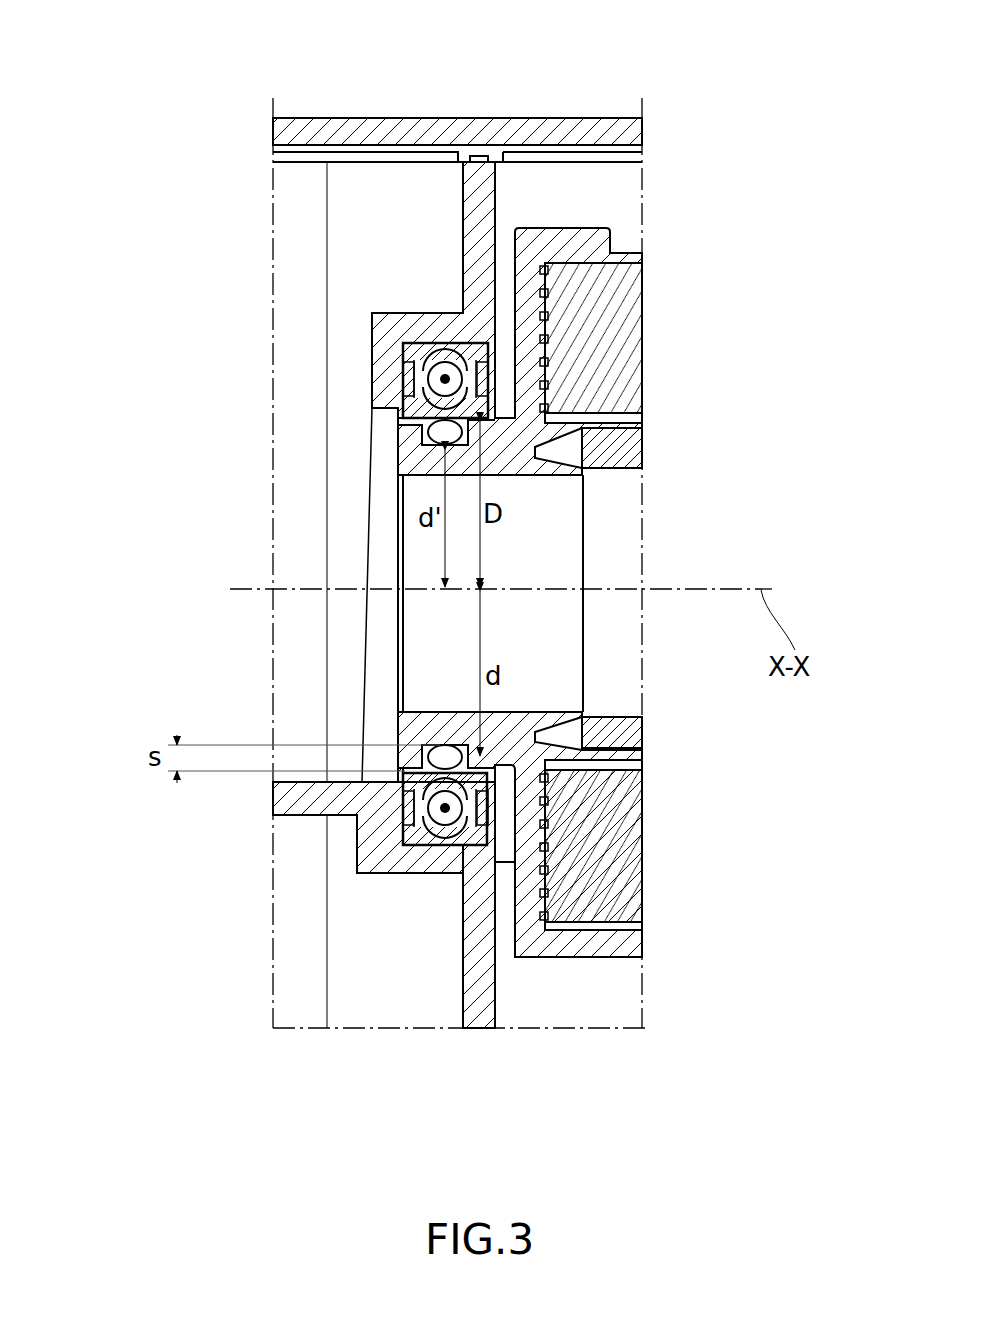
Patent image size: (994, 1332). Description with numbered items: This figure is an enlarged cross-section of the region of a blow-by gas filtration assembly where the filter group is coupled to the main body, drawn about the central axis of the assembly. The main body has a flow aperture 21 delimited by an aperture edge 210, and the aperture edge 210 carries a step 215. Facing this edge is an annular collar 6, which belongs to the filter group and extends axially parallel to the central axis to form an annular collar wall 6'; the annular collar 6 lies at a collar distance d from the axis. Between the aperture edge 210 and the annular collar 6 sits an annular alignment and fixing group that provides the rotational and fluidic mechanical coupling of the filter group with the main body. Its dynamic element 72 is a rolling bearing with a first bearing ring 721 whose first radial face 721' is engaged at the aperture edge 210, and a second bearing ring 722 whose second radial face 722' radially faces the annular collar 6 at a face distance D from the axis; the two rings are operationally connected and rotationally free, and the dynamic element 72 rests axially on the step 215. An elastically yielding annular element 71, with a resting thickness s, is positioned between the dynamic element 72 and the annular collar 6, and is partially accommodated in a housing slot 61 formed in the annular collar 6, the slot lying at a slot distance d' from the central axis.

The flow aperture 21 is at (416, 325).
The step 215 is at (387, 365).
The annular collar wall 6' is at (325, 365).
The housing slot 61 is at (412, 432).
The annular collar 6 is at (359, 588).
The elastically yielding annular element 71 is at (447, 745).
The dynamic element 72 is at (501, 810).
The second bearing ring 722 is at (276, 902).
The second radial face 722' is at (229, 859).
The first bearing ring 721 is at (396, 998).
The first radial face 721' is at (484, 1005).
The aperture edge 210 is at (420, 862).